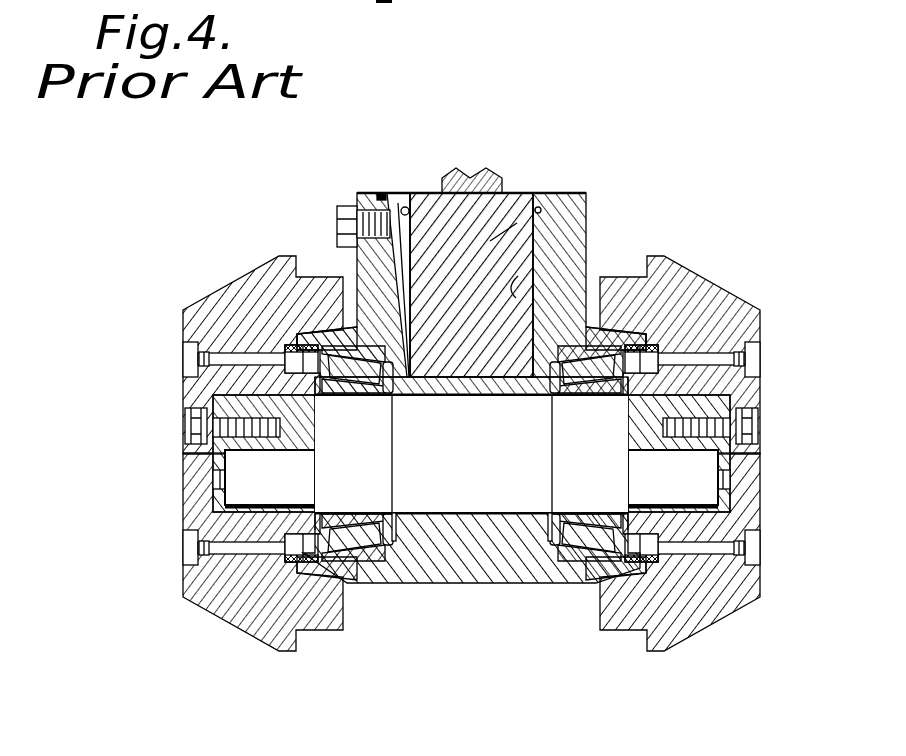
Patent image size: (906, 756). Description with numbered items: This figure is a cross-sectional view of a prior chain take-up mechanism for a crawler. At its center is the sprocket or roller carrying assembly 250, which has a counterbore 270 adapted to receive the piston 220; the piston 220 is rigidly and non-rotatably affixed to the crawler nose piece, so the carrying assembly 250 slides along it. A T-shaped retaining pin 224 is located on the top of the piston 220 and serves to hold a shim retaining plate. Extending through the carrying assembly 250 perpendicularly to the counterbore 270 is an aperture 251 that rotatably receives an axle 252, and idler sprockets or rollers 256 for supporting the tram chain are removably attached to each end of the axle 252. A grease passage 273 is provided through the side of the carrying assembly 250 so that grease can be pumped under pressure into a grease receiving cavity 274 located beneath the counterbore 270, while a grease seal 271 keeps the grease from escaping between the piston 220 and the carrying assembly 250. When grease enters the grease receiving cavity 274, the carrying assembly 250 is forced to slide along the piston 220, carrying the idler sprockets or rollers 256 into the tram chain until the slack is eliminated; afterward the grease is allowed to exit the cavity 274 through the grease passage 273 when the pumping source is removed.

The piston 220 is at (533, 193).
The T-shaped retaining pin 224 is at (468, 188).
The sprocket or roller carrying assembly 250 is at (570, 212).
The aperture 251 is at (500, 528).
The axle 252 is at (498, 496).
The idler sprockets or rollers 256 is at (230, 598).
The counterbore 270 is at (512, 293).
The grease seal 271 is at (405, 200).
The grease passage 273 is at (388, 253).
The grease receiving cavity 274 is at (508, 397).